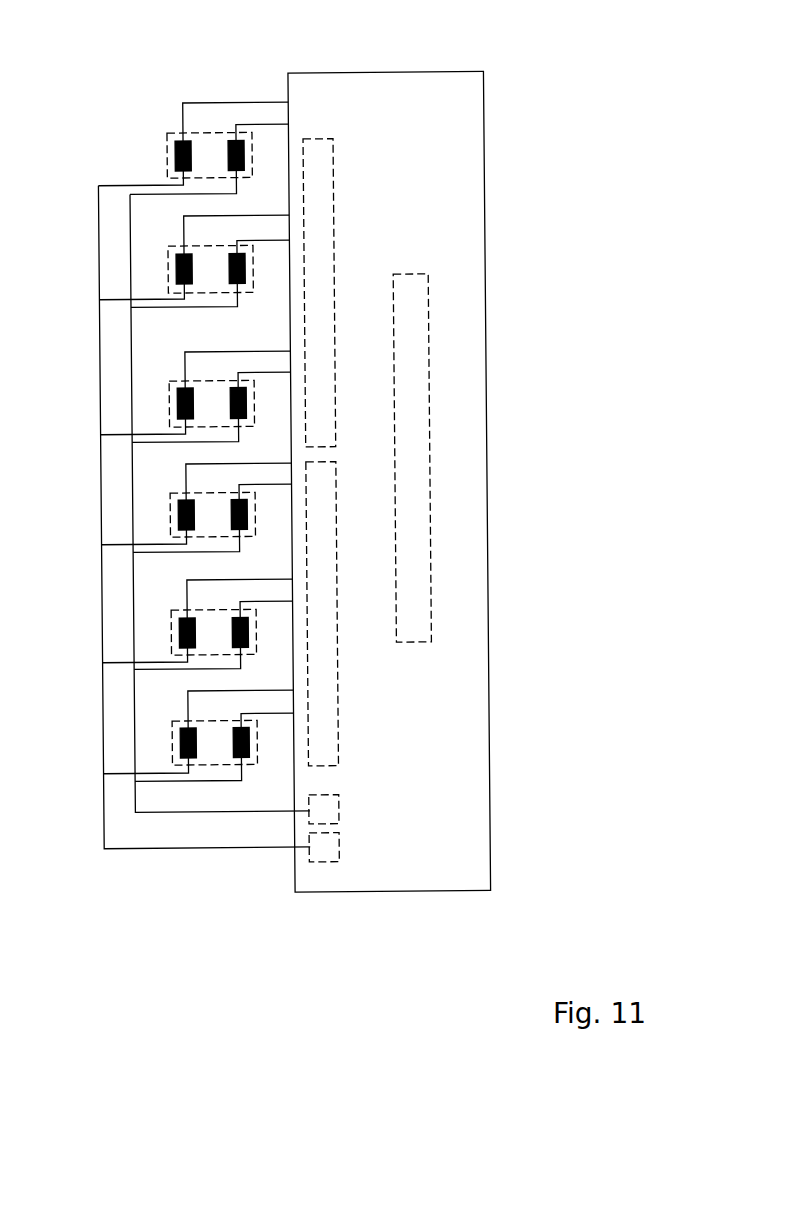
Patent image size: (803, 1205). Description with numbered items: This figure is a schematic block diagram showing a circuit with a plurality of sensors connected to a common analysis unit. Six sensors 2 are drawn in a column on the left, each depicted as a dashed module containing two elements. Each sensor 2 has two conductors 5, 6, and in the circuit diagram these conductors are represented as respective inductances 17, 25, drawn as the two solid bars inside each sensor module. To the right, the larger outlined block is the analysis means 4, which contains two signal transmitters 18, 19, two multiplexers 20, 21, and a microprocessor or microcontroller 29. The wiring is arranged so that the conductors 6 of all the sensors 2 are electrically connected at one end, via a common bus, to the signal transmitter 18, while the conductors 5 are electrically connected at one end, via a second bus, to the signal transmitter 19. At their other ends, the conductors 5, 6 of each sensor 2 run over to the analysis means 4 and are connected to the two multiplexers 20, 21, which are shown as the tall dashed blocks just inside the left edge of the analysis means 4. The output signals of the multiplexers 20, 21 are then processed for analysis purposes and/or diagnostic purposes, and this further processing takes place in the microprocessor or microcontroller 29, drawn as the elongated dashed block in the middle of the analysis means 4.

The sensor 2 is at (172, 158).
The analysis means 4 is at (478, 648).
The conductor 5 is at (172, 258).
The conductor 6 is at (247, 283).
The inductance 17 is at (178, 140).
The signal transmitter 18 is at (320, 806).
The signal transmitter 19 is at (320, 850).
The multiplexer 20 is at (320, 718).
The multiplexer 21 is at (320, 176).
The inductance 25 is at (231, 140).
The microprocessor or microcontroller 29 is at (422, 441).